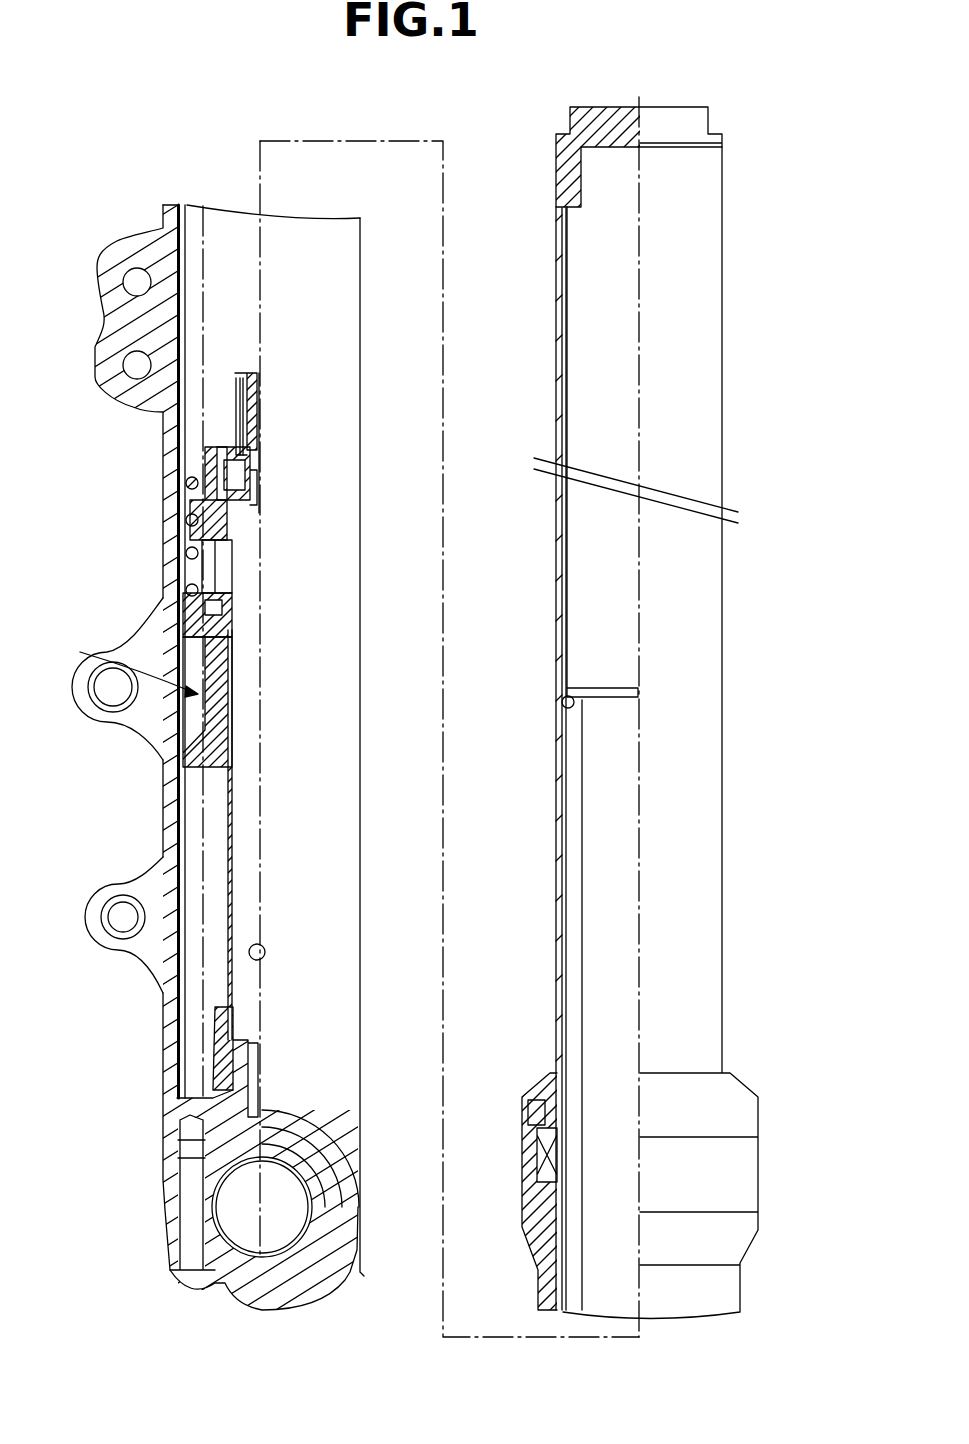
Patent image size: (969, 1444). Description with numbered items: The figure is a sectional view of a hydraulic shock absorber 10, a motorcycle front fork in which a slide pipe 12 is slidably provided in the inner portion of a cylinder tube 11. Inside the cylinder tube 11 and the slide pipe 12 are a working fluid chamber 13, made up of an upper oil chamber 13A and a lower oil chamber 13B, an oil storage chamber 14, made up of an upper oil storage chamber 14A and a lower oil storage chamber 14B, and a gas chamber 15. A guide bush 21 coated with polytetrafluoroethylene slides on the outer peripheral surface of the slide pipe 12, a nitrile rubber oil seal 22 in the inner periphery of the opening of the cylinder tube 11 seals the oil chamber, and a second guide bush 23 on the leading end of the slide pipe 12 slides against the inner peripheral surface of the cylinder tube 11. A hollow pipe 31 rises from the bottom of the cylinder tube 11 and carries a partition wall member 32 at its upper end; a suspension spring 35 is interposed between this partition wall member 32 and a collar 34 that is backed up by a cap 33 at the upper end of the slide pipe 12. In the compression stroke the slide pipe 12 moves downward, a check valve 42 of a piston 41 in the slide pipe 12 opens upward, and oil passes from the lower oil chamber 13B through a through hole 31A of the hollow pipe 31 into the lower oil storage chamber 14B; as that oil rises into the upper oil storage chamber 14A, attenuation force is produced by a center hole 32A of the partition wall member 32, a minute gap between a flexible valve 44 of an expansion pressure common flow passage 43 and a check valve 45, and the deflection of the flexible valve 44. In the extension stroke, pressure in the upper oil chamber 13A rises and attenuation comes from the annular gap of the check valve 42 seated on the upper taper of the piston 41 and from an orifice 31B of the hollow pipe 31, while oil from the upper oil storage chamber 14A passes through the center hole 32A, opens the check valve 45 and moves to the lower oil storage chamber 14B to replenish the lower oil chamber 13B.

The hydraulic shock absorber 10 is at (176, 176).
The cylinder tube 11 is at (158, 320).
The slide pipe 12 is at (556, 501).
The working fluid chamber 13 is at (117, 651).
The upper oil chamber 13A is at (215, 568).
The lower oil chamber 13B is at (198, 812).
The oil storage chamber 14 is at (275, 719).
The upper oil storage chamber 14A is at (225, 215).
The lower oil storage chamber 14B is at (245, 737).
The gas chamber 15 is at (585, 284).
The guide bush 21 is at (548, 1205).
The oil seal 22 is at (538, 1153).
The guide bush 23 is at (175, 713).
The hollow pipe 31 is at (205, 793).
The through hole 31A is at (264, 950).
The orifice 31B is at (232, 681).
The partition wall member 32 is at (190, 492).
The center hole 32A is at (258, 402).
The cap 33 is at (587, 127).
The collar 34 is at (567, 337).
The suspension spring 35 is at (563, 703).
The piston 41 is at (124, 667).
The check valve 42 is at (225, 618).
The expansion pressure common flow passage 43 is at (235, 476).
The flexible valve 44 is at (232, 452).
The check valve 45 is at (205, 462).